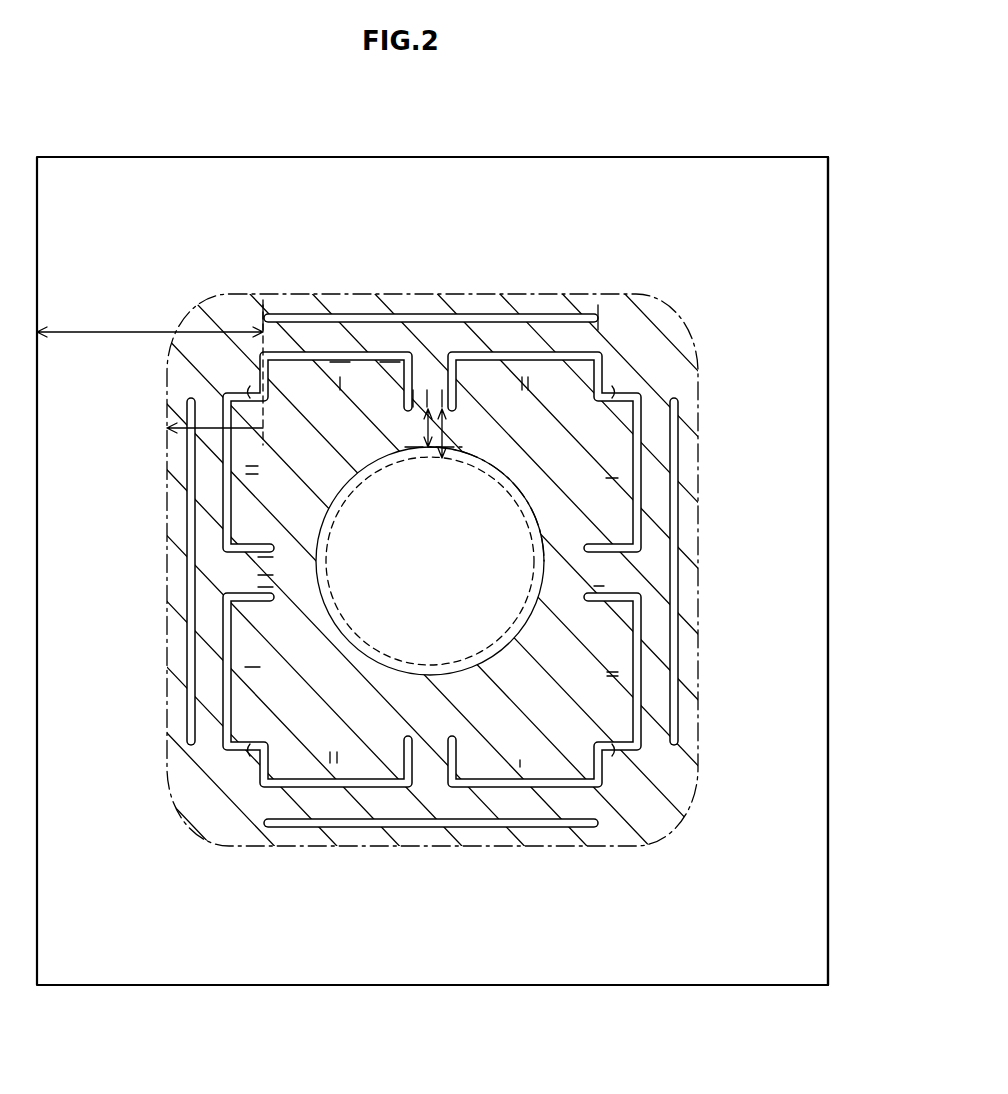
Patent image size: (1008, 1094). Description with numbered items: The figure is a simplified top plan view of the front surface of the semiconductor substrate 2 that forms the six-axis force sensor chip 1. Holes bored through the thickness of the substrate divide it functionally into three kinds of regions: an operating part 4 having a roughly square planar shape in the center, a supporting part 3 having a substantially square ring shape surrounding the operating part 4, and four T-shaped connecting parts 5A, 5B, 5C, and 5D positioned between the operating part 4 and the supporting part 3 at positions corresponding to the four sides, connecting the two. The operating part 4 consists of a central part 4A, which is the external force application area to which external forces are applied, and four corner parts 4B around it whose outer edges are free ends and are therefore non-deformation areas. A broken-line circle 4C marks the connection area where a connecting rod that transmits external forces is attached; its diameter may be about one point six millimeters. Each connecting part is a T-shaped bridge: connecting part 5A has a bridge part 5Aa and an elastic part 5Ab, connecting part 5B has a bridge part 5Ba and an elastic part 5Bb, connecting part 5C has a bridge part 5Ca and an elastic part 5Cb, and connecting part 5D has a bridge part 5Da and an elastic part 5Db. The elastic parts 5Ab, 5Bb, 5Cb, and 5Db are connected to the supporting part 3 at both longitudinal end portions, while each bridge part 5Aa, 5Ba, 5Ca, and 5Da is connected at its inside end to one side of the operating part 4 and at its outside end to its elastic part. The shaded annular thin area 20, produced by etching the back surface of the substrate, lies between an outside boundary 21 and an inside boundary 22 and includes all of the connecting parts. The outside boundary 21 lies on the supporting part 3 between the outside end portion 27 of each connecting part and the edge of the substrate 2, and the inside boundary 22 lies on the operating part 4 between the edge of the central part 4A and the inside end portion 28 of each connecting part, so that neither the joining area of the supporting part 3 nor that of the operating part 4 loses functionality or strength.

The six-axis force sensor chip 1 is at (724, 144).
The semiconductor substrate 2 is at (834, 221).
The supporting part 3 is at (776, 345).
The operating part 4 is at (442, 573).
The central part 4A is at (490, 513).
The corner parts 4B is at (252, 392).
The circle 4C is at (505, 638).
The connecting part 5A is at (429, 344).
The bridge part 5Aa is at (395, 373).
The elastic part 5Ab is at (347, 344).
The connecting part 5B is at (660, 570).
The bridge part 5Ba is at (620, 582).
The elastic part 5Bb is at (660, 458).
The connecting part 5C is at (430, 802).
The bridge part 5Ca is at (455, 762).
The elastic part 5Cb is at (347, 802).
The connecting part 5D is at (207, 570).
The bridge part 5Da is at (238, 570).
The elastic part 5Db is at (208, 692).
The thin area 20 is at (667, 298).
The outside boundary 21 is at (482, 293).
The inside boundary 22 is at (490, 455).
The outside end portion 27 is at (263, 314).
The inside end portion 28 is at (443, 417).